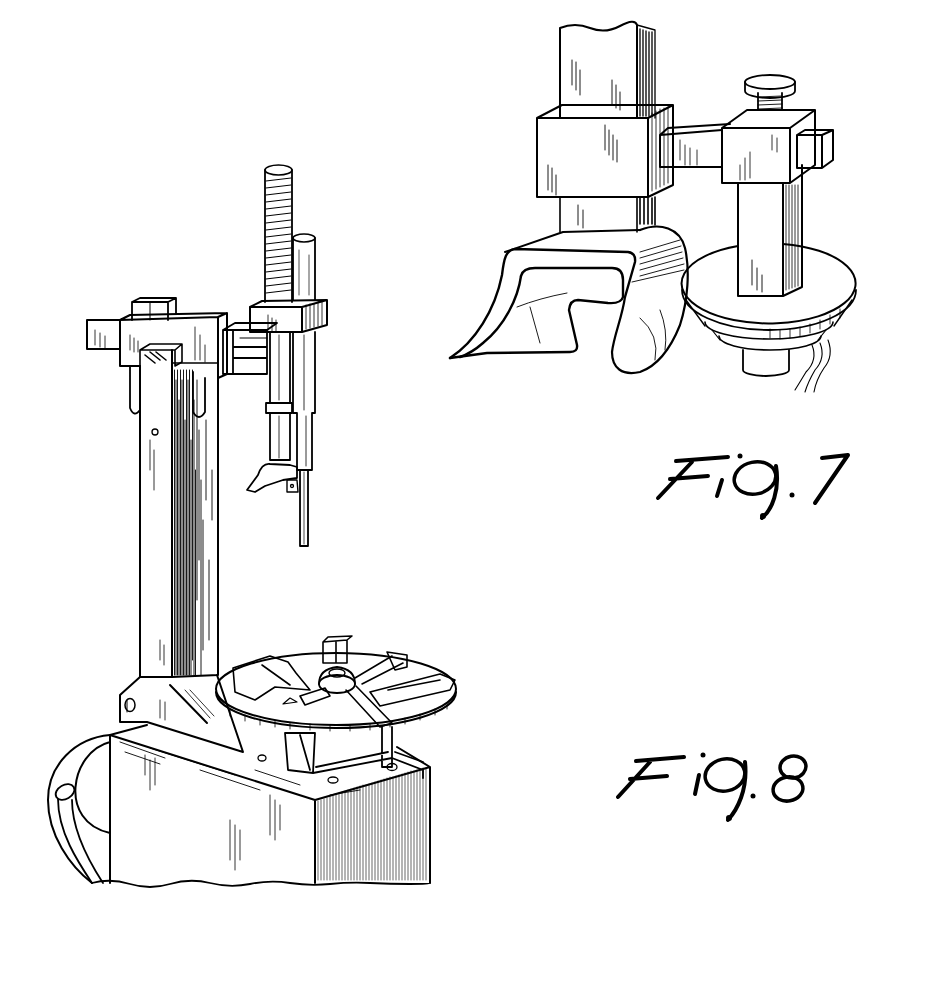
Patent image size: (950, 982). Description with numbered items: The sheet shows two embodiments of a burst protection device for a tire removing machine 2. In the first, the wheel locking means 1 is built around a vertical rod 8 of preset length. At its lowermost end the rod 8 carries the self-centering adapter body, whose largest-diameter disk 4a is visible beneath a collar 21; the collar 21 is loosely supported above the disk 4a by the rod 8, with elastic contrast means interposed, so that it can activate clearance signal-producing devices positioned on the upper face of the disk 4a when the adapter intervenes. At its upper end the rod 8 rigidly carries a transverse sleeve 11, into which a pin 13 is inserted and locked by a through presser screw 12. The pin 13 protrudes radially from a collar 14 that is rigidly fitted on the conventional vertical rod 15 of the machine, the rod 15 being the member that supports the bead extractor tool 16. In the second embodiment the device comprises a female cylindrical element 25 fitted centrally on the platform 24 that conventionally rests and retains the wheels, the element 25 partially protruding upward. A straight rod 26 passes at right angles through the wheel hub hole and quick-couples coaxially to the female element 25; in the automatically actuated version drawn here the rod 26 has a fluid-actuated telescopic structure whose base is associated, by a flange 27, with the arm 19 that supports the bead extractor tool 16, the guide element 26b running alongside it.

In FIG. 7, the wheel locking means 1 is at (850, 185).
In FIG. 8, the wheel locking means 1 is at (343, 443).
In FIG. 8, the tire removing machine 2 is at (69, 861).
In FIG. 7, the disk 4a is at (784, 362).
In FIG. 7, the vertical rod 8 is at (757, 217).
In FIG. 7, the transverse sleeve 11 is at (745, 145).
In FIG. 7, the through presser screw 12 is at (770, 80).
In FIG. 7, the pin 13 is at (697, 155).
In FIG. 7, the collar 14 is at (556, 146).
In FIG. 7, the vertical rod 15 is at (580, 50).
In FIG. 7, the bead extractor tool 16 is at (515, 337).
In FIG. 8, the bead extractor tool 16 is at (255, 495).
In FIG. 8, the arm 19 is at (245, 350).
In FIG. 7, the collar 21 is at (740, 307).
In FIG. 8, the platform 24 is at (433, 702).
In FIG. 8, the female cylindrical element 25 is at (348, 675).
In FIG. 8, the straight rod 26 is at (310, 508).
In FIG. 8, the guide rod 26b is at (314, 273).
In FIG. 8, the flange 27 is at (260, 308).